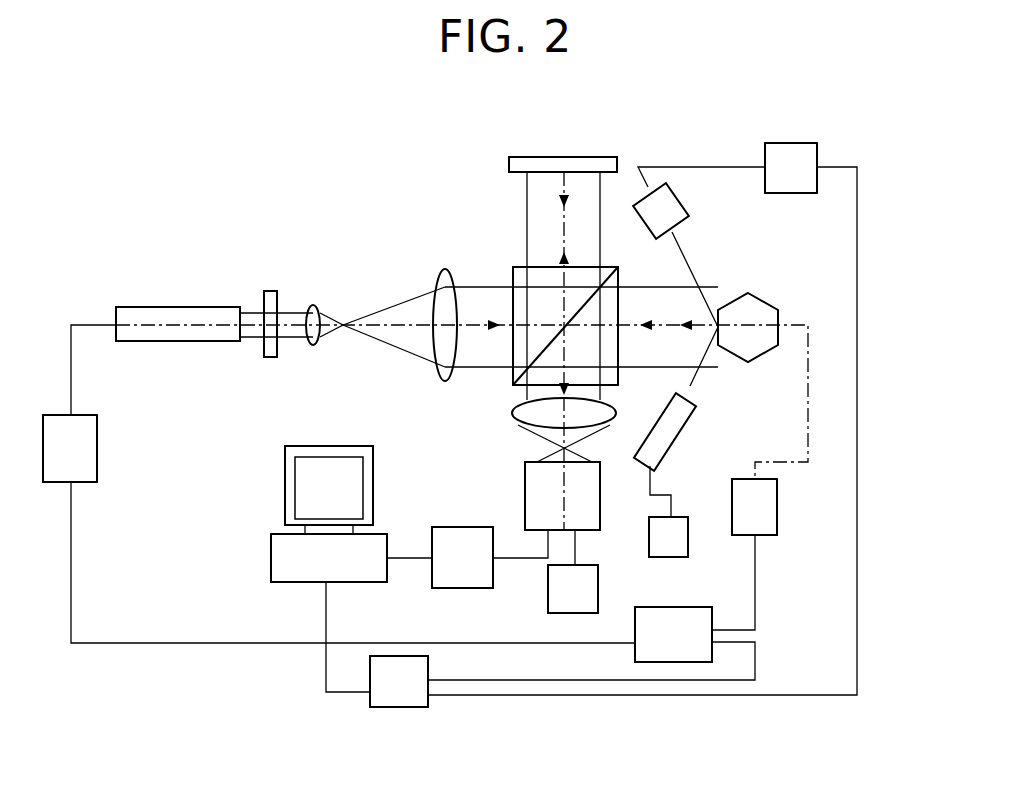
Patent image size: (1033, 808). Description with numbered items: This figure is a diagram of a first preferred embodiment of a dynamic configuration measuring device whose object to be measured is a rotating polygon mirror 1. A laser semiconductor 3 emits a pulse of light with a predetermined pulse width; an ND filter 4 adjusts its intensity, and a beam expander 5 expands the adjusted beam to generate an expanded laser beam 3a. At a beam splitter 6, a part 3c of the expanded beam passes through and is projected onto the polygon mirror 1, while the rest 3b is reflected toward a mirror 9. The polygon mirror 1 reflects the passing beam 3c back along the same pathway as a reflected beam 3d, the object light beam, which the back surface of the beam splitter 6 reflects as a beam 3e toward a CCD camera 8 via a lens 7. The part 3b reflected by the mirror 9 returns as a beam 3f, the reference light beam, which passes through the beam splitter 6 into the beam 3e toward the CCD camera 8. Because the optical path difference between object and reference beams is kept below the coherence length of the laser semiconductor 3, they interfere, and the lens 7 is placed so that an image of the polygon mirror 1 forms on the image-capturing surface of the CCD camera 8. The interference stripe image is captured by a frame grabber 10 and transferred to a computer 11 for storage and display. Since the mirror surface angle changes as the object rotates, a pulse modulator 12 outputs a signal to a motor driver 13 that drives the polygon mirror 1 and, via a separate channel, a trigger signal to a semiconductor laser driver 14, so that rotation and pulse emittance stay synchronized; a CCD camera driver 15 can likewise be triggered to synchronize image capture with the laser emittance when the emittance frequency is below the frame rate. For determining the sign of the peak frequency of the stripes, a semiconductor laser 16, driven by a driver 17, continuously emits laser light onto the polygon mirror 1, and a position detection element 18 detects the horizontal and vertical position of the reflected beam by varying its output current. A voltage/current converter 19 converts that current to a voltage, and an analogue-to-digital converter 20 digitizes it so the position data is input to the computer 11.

The polygon mirror 1 is at (748, 293).
The laser semiconductor 3 is at (188, 307).
The expanded laser beam 3a is at (481, 312).
The reflected part of the laser beam 3b is at (564, 289).
The passing beam 3c is at (612, 302).
The reflected beam (object light beam) 3d is at (718, 327).
The beam toward the CCD camera 3e is at (565, 362).
The reference light beam 3f is at (563, 190).
The ND filter 4 is at (270, 291).
The beam expander 5 is at (445, 384).
The beam splitter 6 is at (604, 270).
The lens 7 is at (616, 411).
The CCD camera 8 is at (525, 462).
The mirror 9 is at (509, 165).
The frame grabber 10 is at (465, 527).
The computer 11 is at (380, 532).
The pulse modulator 12 is at (695, 607).
The motor driver 13 is at (777, 497).
The semiconductor laser driver 14 is at (97, 445).
The CCD camera driver 15 is at (548, 594).
The semiconductor laser 16 is at (690, 432).
The driver 17 is at (672, 517).
The position detection element 18 is at (688, 208).
The voltage/current converter 19 is at (793, 193).
The analogue-to-digital converter 20 is at (380, 656).